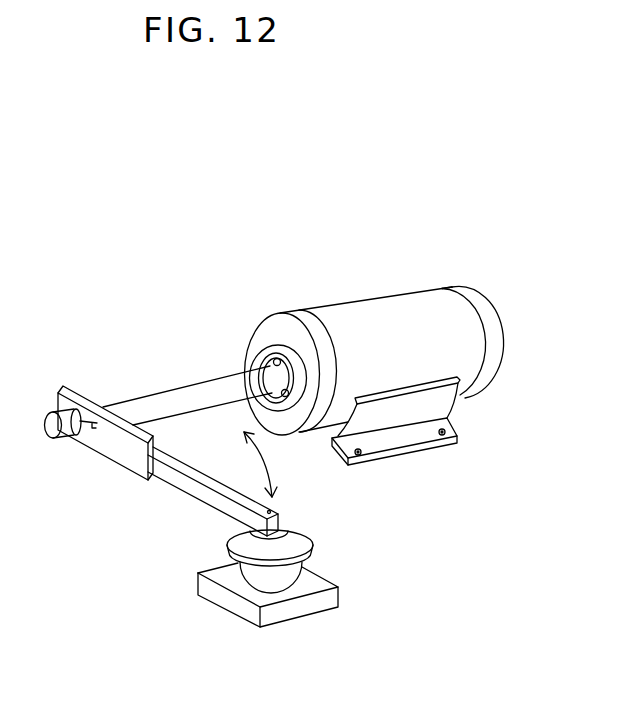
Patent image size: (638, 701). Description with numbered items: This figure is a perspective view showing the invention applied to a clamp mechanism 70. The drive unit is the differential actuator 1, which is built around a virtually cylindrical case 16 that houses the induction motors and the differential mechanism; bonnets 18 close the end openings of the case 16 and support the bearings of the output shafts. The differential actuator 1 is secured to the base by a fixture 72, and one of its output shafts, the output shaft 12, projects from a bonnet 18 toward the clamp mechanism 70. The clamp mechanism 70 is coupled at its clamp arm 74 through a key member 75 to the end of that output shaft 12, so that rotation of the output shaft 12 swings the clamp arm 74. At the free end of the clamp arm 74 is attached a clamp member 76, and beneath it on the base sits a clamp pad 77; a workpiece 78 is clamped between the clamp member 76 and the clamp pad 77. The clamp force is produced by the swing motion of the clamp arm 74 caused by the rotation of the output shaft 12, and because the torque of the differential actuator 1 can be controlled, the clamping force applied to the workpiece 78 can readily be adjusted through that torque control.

The differential actuator 1 is at (400, 359).
The output shaft 12 is at (205, 395).
The case 16 is at (368, 297).
The bonnet 18 is at (270, 326).
The clamp mechanism 70 is at (213, 489).
The fixture 72 is at (414, 442).
The clamp arm 74 is at (112, 457).
The key member 75 is at (86, 442).
The clamp member 76 is at (304, 533).
The clamp pad 77 is at (323, 581).
The workpiece 78 is at (243, 588).